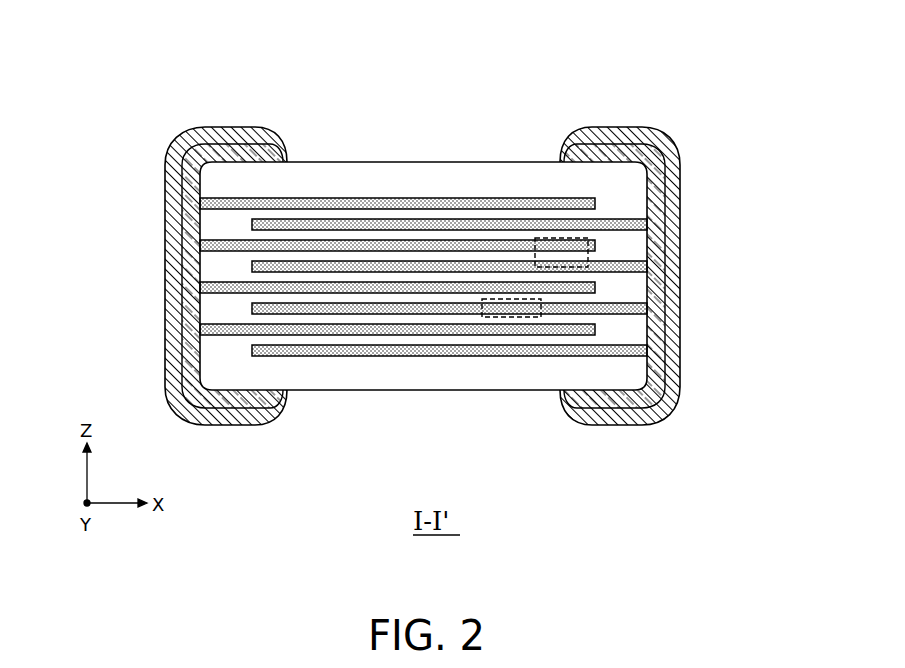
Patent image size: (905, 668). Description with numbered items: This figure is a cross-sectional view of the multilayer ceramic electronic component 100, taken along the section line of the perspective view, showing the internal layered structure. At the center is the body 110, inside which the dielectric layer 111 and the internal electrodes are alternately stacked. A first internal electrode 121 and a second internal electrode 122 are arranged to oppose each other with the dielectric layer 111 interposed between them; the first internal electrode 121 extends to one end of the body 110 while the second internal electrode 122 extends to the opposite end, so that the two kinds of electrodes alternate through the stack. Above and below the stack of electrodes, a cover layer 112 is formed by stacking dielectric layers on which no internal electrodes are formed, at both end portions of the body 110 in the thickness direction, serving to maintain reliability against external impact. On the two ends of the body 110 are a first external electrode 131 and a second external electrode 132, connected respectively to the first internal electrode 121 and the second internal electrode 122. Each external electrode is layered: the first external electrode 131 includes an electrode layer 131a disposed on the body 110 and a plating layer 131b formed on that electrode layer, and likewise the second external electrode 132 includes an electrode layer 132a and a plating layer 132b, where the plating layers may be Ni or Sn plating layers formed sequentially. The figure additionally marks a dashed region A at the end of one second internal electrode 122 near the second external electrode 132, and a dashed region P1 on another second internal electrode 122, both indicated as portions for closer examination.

The multilayer ceramic electronic component 100 is at (453, 33).
The body 110 is at (362, 163).
The dielectric layer 111 is at (313, 237).
The cover layer 112 is at (427, 176).
The first internal electrode 121 is at (487, 200).
The second internal electrode 122 is at (543, 220).
The first external electrode 131 is at (152, 276).
The electrode layer 131a is at (200, 208).
The plating layer 131b is at (170, 233).
The second external electrode 132 is at (693, 276).
The electrode layer 132a is at (655, 190).
The plating layer 132b is at (674, 210).
The region A is at (589, 251).
The region P1 is at (510, 318).